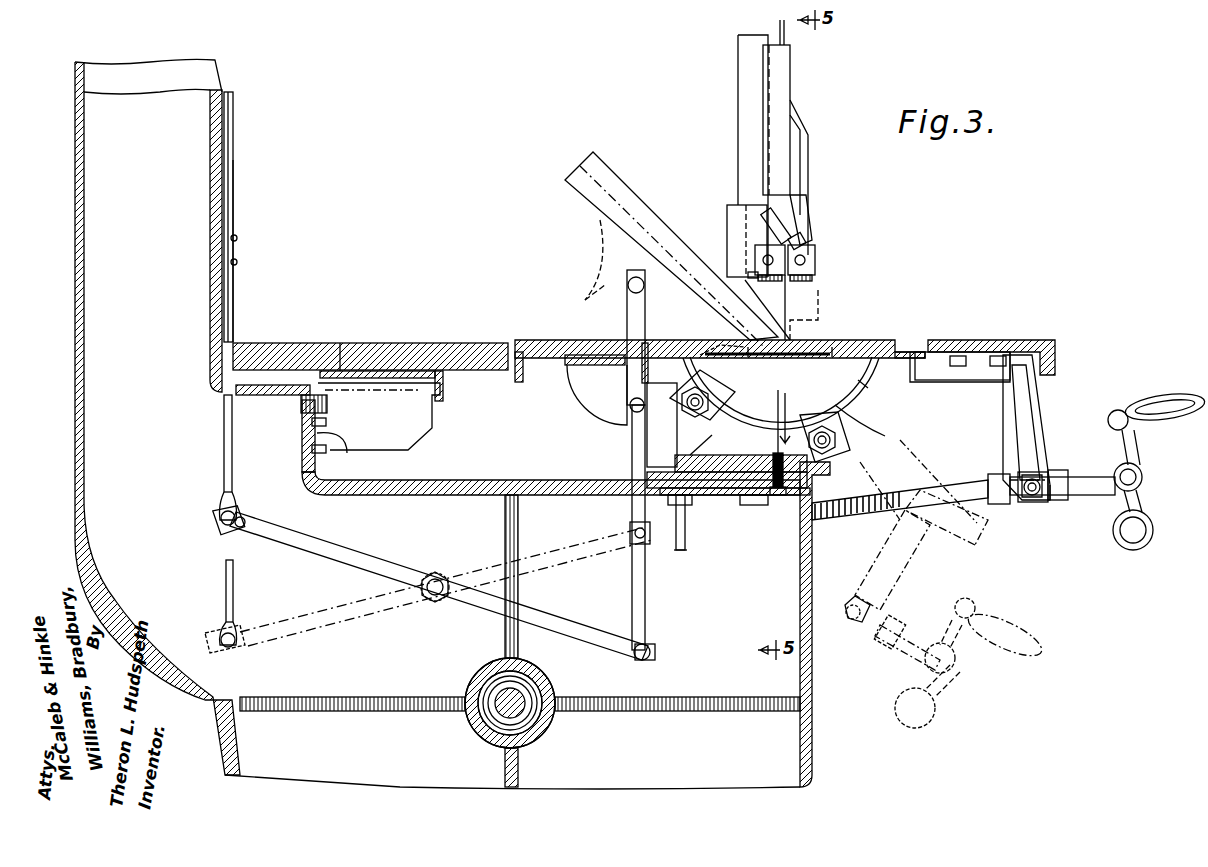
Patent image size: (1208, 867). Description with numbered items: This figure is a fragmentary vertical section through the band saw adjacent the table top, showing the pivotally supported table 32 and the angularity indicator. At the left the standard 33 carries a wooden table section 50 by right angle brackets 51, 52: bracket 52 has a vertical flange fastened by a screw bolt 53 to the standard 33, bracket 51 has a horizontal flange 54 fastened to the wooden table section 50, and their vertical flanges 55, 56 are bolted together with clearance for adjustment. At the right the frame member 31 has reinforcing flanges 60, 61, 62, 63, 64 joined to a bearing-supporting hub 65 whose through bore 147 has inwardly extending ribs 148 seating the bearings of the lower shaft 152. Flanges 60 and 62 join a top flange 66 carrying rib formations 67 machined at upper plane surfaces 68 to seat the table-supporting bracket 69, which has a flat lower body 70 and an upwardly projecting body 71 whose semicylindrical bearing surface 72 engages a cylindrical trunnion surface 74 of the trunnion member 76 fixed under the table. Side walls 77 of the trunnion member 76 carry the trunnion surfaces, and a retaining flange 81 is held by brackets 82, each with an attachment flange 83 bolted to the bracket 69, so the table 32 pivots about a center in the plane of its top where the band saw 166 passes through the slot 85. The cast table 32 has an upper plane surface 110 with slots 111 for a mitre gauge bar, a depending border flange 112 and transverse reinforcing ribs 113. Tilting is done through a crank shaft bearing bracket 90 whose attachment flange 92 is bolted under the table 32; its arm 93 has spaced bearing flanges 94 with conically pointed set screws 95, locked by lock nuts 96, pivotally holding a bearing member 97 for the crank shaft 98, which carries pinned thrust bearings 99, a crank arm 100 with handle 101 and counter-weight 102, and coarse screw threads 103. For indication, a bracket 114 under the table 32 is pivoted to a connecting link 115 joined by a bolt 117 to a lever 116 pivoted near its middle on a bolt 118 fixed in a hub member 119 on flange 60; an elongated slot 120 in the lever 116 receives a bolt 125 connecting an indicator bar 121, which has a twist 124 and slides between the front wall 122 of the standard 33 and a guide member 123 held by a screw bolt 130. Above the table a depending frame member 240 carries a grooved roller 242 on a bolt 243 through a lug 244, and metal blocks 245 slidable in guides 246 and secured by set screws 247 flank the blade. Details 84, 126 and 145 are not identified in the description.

The frame member 31 is at (815, 760).
The table 32 is at (835, 338).
The standard 33 is at (75, 296).
The wooden table section 50 is at (400, 343).
The right angle bracket 51 is at (438, 343).
The right angle bracket 52 is at (325, 445).
The screw bolt 53 is at (305, 343).
The horizontal flange 54 is at (355, 343).
The vertical flange 55 is at (436, 445).
The vertical flange 56 is at (410, 445).
The reinforcing flange 60 is at (812, 535).
The reinforcing flange 61 is at (680, 697).
The reinforcing flange 62 is at (518, 585).
The reinforcing flange 63 is at (375, 697).
The reinforcing flange 64 is at (518, 764).
The bearing-supporting hub 65 is at (548, 680).
The top flange 66 is at (548, 480).
The rib formations 67 is at (700, 455).
The upper plane surfaces 68 is at (711, 429).
The table-supporting bracket 69 is at (752, 505).
The lower body 70 is at (710, 498).
The upwardly projecting body 71 is at (785, 380).
The bearing surface 72 is at (715, 372).
The trunnion surface 74 is at (778, 420).
The trunnion member 76 is at (862, 385).
The side walls 77 is at (795, 365).
The retaining flange 81 is at (848, 400).
The bracket 82 is at (680, 350).
The attachment flange 83 is at (748, 347).
The saw line 84 is at (785, 338).
The slot 85 is at (790, 340).
The crank shaft bearing bracket 90 is at (1038, 400).
The attachment flange 92 is at (985, 360).
The arm 93 is at (1028, 430).
The bearing flanges 94 is at (1025, 495).
The set screws 95 is at (1040, 498).
The lock nuts 96 is at (1030, 495).
The bearing member 97 is at (1045, 470).
The crank shaft 98 is at (1080, 477).
The thrust bearings 99 is at (990, 478).
The crank arm 100 is at (1140, 440).
The handle 101 is at (1165, 396).
The counter-weight 102 is at (1150, 522).
The screw threads 103 is at (845, 508).
The upper plane surface 110 is at (835, 340).
The slots 111 is at (918, 340).
The border flange 112 is at (1055, 340).
The reinforcing ribs 113 is at (590, 375).
The bracket 114 is at (545, 343).
The connecting link 115 is at (632, 462).
The lever 116 is at (552, 640).
The bolt 117 is at (645, 565).
The bolt 118 is at (445, 578).
The hub member 119 is at (428, 577).
The elongated slot 120 is at (245, 522).
The indicator bar 121 is at (224, 432).
The front wall 122 is at (232, 212).
The guide member 123 is at (235, 182).
The twist 124 is at (220, 495).
The bolt 125 is at (220, 530).
The stud 126 is at (236, 264).
The screw bolt 130 is at (236, 240).
The compartment 145 is at (742, 594).
The through bore 147 is at (475, 735).
The rib 148 is at (470, 680).
The lower shaft 152 is at (540, 710).
The band saw 166 is at (785, 285).
The depending frame member 240 is at (760, 78).
The grooved roller 242 is at (800, 210).
The bolt 243 is at (748, 208).
The lug 244 is at (795, 195).
The metal blocks 245 is at (755, 260).
The guides 246 is at (805, 232).
The set screws 247 is at (818, 262).